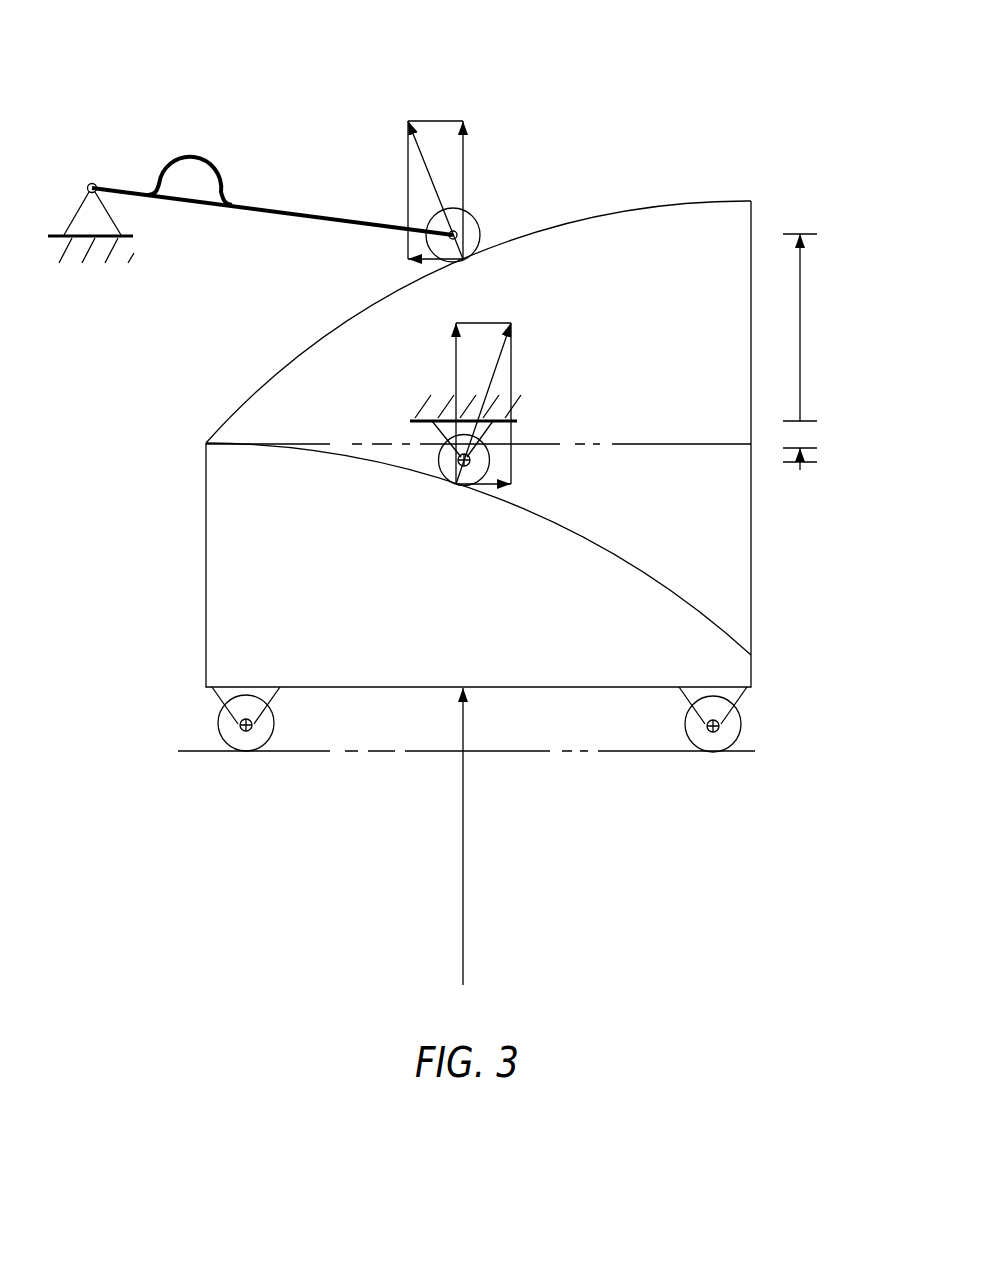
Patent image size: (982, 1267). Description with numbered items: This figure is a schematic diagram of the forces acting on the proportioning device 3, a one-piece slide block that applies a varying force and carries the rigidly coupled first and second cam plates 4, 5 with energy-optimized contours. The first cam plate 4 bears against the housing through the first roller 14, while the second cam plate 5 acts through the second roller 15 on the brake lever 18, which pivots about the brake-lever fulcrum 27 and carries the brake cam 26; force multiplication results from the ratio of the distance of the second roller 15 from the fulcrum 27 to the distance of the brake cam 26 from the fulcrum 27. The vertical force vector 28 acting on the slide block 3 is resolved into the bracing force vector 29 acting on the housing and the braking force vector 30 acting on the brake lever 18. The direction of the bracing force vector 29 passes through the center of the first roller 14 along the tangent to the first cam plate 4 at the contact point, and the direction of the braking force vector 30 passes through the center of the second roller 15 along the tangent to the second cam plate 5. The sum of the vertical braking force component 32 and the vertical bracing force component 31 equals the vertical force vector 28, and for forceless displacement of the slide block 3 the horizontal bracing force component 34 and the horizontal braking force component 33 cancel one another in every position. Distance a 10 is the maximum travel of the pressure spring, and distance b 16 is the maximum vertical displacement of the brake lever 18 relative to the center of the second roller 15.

The proportioning device 3 is at (622, 72).
The first cam plate 4 is at (650, 578).
The second cam plate 5 is at (635, 208).
The distance a 10 is at (800, 452).
The first roller 14 is at (480, 467).
The second roller 15 is at (470, 233).
The distance b 16 is at (798, 287).
The brake lever 18 is at (260, 212).
The brake cam 26 is at (189, 162).
The brake-lever fulcrum 27 is at (93, 184).
The force vector F_Ke 28 is at (465, 925).
The bracing force vector F_Ab 29 is at (497, 370).
The braking force vector F_Br 30 is at (432, 178).
The vertical force component F_Ab-v 31 is at (455, 362).
The vertical force component F_Br-v 32 is at (463, 175).
The horizontal force component F_Br-h 33 is at (440, 266).
The horizontal force component F_Ab-h 34 is at (483, 488).